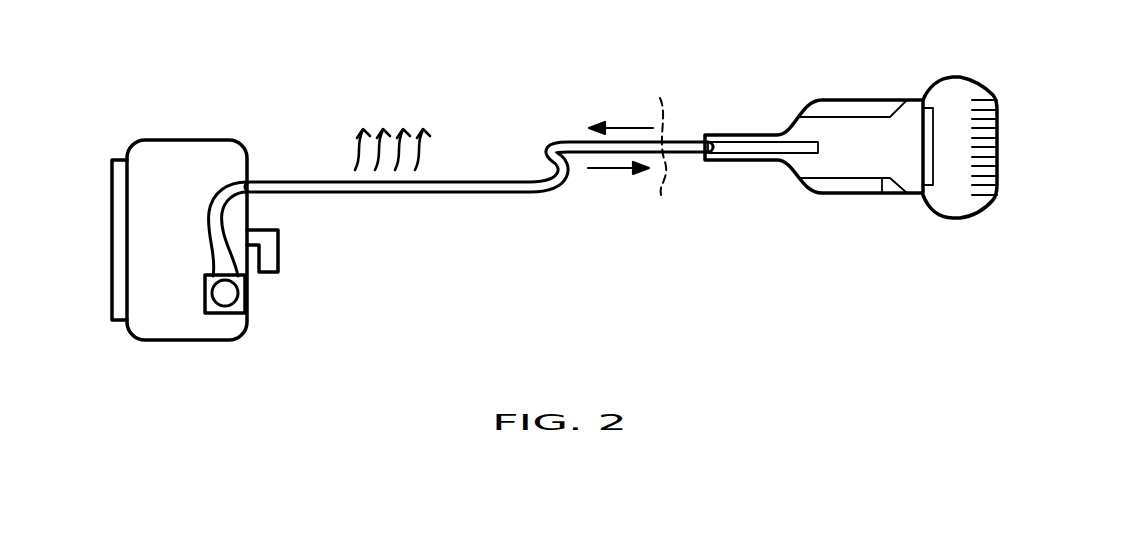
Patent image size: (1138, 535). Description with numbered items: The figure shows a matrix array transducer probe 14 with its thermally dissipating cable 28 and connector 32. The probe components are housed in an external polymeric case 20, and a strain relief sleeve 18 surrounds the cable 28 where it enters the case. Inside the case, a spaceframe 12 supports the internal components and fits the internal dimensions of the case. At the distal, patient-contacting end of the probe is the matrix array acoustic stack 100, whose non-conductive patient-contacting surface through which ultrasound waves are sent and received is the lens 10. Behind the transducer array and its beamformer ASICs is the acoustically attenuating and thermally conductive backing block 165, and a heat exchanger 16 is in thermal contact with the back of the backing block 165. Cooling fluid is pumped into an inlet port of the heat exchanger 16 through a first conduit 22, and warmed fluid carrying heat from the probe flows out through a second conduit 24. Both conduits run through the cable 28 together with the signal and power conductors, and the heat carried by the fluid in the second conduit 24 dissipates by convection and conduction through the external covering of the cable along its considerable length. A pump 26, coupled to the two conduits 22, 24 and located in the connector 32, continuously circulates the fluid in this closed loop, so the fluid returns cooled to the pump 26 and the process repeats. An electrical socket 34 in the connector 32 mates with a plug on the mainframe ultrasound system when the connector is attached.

The matrix array acoustic stack 100 is at (908, 142).
The lens 10 is at (996, 137).
The spaceframe 12 is at (879, 194).
The matrix array transducer probe 14 is at (822, 88).
The heat exchanger 16 is at (862, 155).
The strain relief sleeve 18 is at (740, 140).
The polymeric case 20 is at (893, 100).
The first conduit 22 is at (222, 213).
The second conduit 24 is at (209, 227).
The pump 26 is at (243, 292).
The cable 28 is at (513, 193).
The connector 32 is at (187, 152).
The electrical socket 34 is at (118, 232).
The backing block 165 is at (970, 200).